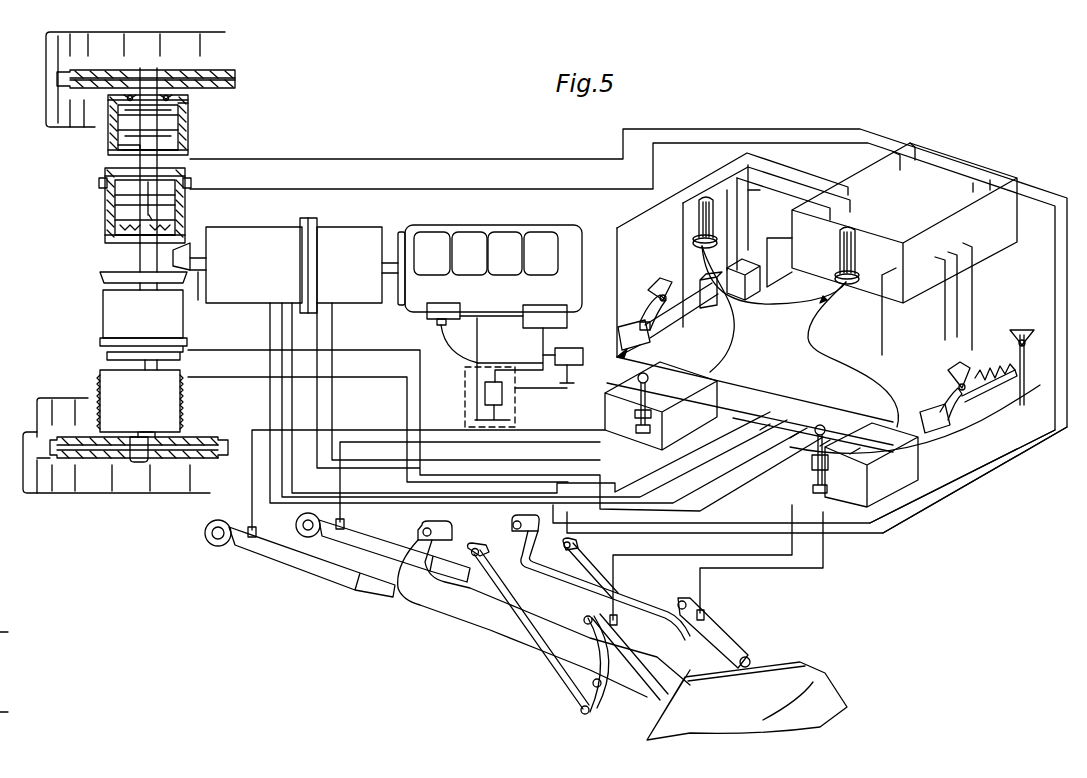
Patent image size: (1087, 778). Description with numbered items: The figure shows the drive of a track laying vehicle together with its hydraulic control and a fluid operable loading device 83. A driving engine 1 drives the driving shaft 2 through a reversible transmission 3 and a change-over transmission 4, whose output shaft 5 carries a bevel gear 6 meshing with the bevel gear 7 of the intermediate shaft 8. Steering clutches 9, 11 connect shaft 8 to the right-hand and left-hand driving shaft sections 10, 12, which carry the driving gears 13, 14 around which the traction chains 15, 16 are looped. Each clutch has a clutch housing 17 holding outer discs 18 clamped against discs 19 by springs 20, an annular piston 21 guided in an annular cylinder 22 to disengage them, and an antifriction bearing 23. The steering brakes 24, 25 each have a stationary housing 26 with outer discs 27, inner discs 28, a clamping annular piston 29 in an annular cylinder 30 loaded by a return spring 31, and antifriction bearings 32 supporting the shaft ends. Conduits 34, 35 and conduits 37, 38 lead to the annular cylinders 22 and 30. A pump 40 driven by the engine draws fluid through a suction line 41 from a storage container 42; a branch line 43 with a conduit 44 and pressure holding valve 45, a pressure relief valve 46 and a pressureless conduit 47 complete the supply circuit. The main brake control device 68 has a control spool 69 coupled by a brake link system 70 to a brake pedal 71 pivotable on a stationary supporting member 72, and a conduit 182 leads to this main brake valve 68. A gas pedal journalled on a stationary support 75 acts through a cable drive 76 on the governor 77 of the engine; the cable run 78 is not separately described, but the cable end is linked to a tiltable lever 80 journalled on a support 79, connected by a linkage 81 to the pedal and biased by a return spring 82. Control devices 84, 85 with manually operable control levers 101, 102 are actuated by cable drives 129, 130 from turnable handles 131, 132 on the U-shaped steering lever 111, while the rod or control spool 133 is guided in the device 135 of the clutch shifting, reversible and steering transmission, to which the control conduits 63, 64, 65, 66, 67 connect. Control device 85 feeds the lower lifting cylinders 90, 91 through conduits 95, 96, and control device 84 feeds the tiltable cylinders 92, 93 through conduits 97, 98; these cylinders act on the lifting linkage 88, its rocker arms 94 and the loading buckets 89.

The driving engine 1 is at (555, 226).
The driving shaft 2 is at (388, 262).
The reversible transmission 3 is at (355, 232).
The change-over transmission 4 is at (252, 232).
The output shaft 5 is at (198, 289).
The bevel gear 6 is at (180, 250).
The bevel gear 7 is at (110, 274).
The intermediate shaft 8 is at (140, 256).
The steering clutch 9 is at (98, 312).
The right-hand driving shaft section 10 is at (138, 462).
The steering clutch 11 is at (98, 207).
The left-hand driving shaft section 12 is at (148, 68).
The driving gear 13 is at (206, 437).
The driving gear 14 is at (240, 82).
The traction chain 15 is at (90, 490).
The traction chain 16 is at (205, 42).
The clutch housing 17 is at (112, 222).
The outer discs 18 is at (192, 200).
The discs 19 is at (147, 196).
The springs 20 is at (185, 222).
The annular piston 21 is at (115, 196).
The annular cylinder 22 is at (99, 182).
The antifriction bearing 23 is at (192, 176).
The steering brake 24 is at (100, 134).
The steering brake 25 is at (96, 374).
The housing 26 is at (190, 118).
The outer discs 27 is at (190, 128).
The inner discs 28 is at (154, 91).
The annular piston 29 is at (118, 146).
The annular cylinder 30 is at (128, 152).
The return spring 31 is at (190, 106).
The antifriction bearing 32 is at (126, 95).
The conduit 34 is at (960, 478).
The conduit 35 is at (990, 478).
The conduit 37 is at (497, 188).
The conduit 38 is at (465, 158).
The pump 40 is at (550, 305).
The suction line 41 is at (491, 369).
The fluid storage container 42 is at (465, 380).
The branch line 43 is at (556, 340).
The conduit 44 is at (535, 368).
The pressure holding valve 45 is at (485, 394).
The pressure relief valve 46 is at (583, 348).
The pressureless conduit 47 is at (525, 385).
The control conduit 63 is at (612, 468).
The control conduit 64 is at (622, 425).
The control conduit 65 is at (660, 480).
The control conduit 66 is at (712, 490).
The control conduit 67 is at (752, 475).
The main brake control device 68 is at (770, 302).
The control spool 69 is at (680, 306).
The brake link system 70 is at (686, 319).
The pedal 71 is at (628, 320).
The stationary supporting member 72 is at (672, 280).
The stationary support 75 is at (948, 380).
The cable drive 76 is at (930, 405).
The governor 77 is at (427, 312).
The cable 78 is at (930, 445).
The support 79 is at (1022, 328).
The tiltable lever 80 is at (1024, 405).
The linkage 81 is at (980, 395).
The return spring 82 is at (988, 364).
The loading device 83 is at (500, 668).
The control device 84 is at (905, 492).
The control device 85 is at (720, 402).
The lifting linkage 88 is at (440, 603).
The loading buckets 89 is at (830, 692).
The lower lifting cylinder 90 is at (292, 556).
The lower lifting cylinder 91 is at (378, 545).
The tiltable cylinder 92 is at (640, 665).
The tiltable cylinder 93 is at (718, 638).
The rocker arms 94 is at (585, 700).
The conduit 95 is at (372, 428).
The conduit 96 is at (392, 440).
The conduit 97 is at (655, 556).
The conduit 98 is at (778, 569).
The manually operable control lever 101 is at (815, 468).
The manually operable control lever 102 is at (605, 404).
The steering lever 111 is at (748, 300).
The cable drive 129 is at (830, 350).
The cable drive 130 is at (735, 340).
The turnable handle 131 is at (858, 256).
The turnable handle 132 is at (696, 226).
The rod 133 is at (810, 262).
The device of the clutch shifting, reversible and steering transmission 135 is at (930, 190).
The conduit 182 is at (745, 212).